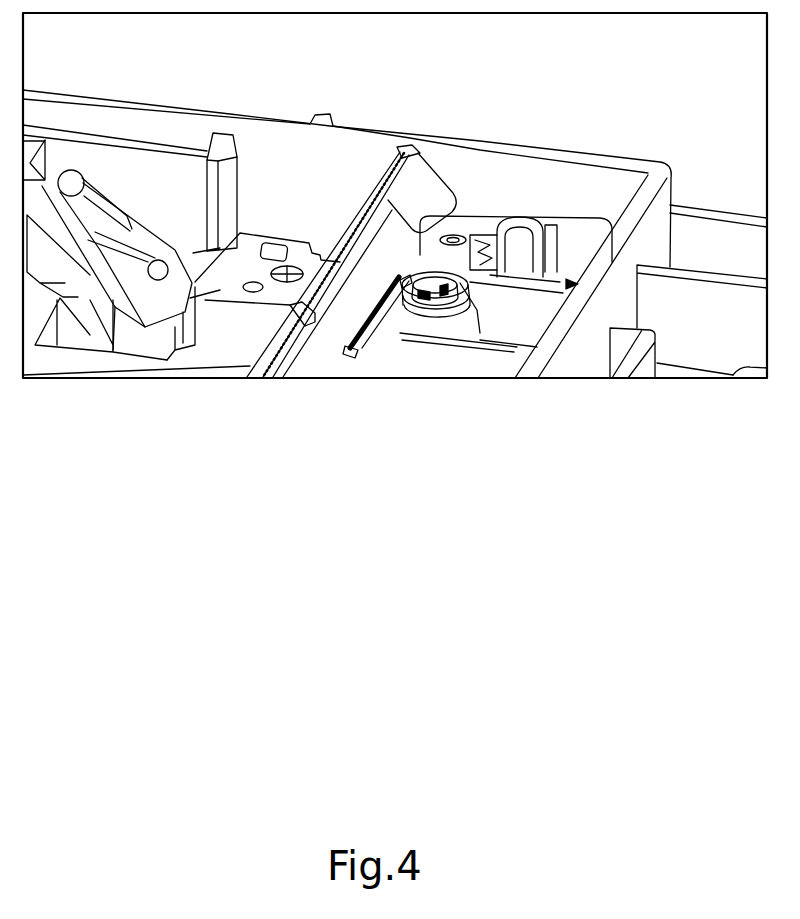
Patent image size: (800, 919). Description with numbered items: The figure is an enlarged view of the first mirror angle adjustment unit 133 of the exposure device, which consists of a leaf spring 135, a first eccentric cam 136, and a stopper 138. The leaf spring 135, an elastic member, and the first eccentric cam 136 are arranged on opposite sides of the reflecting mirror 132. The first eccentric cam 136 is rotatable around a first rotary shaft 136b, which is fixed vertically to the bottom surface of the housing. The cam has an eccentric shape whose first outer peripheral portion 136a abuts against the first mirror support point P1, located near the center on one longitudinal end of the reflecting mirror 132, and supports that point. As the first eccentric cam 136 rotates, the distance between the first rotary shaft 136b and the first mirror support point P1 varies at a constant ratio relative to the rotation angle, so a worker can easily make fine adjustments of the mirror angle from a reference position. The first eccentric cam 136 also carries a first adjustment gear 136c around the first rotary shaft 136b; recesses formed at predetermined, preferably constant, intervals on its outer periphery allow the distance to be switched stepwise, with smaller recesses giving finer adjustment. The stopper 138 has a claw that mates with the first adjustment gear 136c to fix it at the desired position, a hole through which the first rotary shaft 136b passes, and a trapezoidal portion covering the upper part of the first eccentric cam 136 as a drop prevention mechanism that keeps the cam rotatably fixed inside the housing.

The reflecting mirror 132 is at (404, 264).
The first mirror support point P1 is at (382, 242).
The first mirror angle adjustment unit 133 is at (652, 78).
The leaf spring 135 is at (422, 178).
The first eccentric cam 136 is at (453, 313).
The first outer peripheral portion 136a is at (401, 293).
The first rotary shaft 136b is at (455, 235).
The first adjustment gear 136c is at (441, 272).
The stopper 138 is at (528, 217).